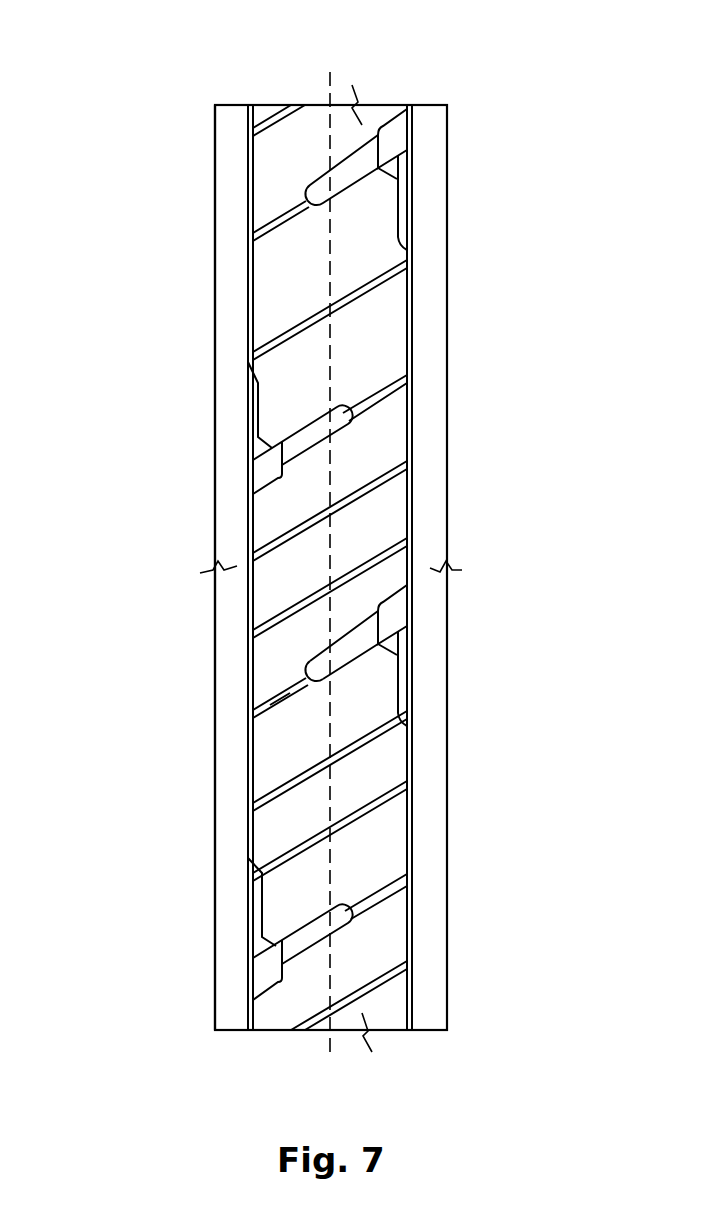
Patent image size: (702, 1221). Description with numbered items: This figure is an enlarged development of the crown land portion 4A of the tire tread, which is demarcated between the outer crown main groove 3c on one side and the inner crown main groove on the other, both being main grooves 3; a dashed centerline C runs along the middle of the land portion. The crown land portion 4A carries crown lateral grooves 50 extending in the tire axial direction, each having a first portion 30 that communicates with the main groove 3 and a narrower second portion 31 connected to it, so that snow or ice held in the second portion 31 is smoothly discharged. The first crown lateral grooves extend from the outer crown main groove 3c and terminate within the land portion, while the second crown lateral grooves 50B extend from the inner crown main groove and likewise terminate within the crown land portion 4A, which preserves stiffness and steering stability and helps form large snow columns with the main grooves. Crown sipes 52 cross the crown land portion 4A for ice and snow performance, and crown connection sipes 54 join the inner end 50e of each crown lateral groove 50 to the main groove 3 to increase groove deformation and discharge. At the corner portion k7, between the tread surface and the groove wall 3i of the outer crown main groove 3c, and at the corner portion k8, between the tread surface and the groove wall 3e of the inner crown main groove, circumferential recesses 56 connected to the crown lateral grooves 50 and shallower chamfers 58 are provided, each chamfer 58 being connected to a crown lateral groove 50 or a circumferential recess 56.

The main groove 3 is at (427, 131).
The outer crown main groove 3c is at (233, 131).
The groove wall of the outer crown main groove 3i is at (247, 1018).
The groove wall of the inner crown main groove 3e is at (413, 1018).
The crown land portion 4A is at (296, 149).
The central axis C is at (330, 555).
The chamfer 58 is at (250, 292).
The crown sipe 52 is at (292, 532).
The crown lateral groove 50 is at (307, 438).
The second crown lateral groove 50B is at (350, 175).
The inner end of the crown lateral groove 50e is at (313, 686).
The first portion 30 is at (397, 622).
The second portion 31 is at (352, 652).
The circumferential recess 56 is at (252, 432).
The crown connection sipe 54 is at (282, 697).
The corner portion k7 is at (245, 838).
The corner portion k8 is at (415, 840).